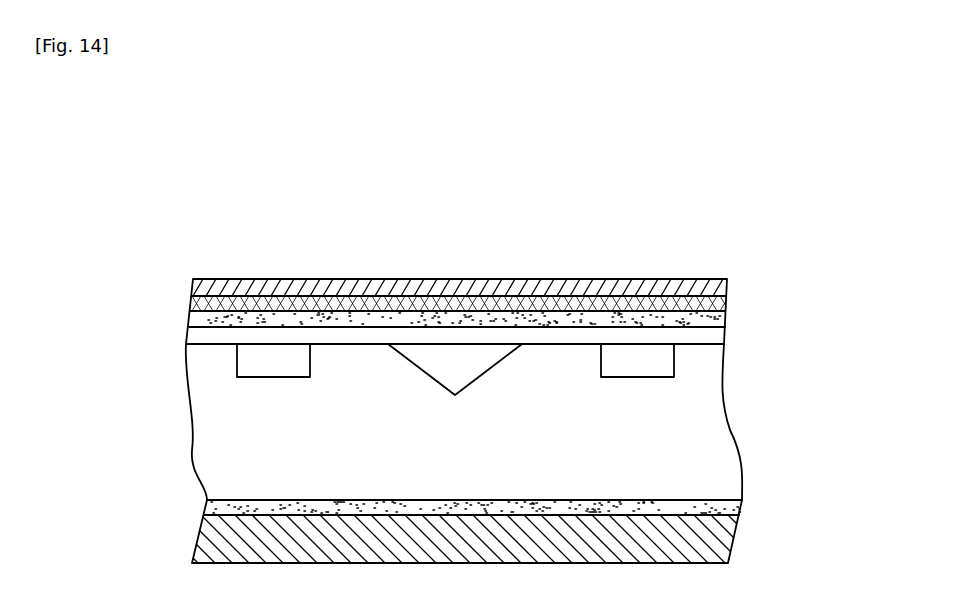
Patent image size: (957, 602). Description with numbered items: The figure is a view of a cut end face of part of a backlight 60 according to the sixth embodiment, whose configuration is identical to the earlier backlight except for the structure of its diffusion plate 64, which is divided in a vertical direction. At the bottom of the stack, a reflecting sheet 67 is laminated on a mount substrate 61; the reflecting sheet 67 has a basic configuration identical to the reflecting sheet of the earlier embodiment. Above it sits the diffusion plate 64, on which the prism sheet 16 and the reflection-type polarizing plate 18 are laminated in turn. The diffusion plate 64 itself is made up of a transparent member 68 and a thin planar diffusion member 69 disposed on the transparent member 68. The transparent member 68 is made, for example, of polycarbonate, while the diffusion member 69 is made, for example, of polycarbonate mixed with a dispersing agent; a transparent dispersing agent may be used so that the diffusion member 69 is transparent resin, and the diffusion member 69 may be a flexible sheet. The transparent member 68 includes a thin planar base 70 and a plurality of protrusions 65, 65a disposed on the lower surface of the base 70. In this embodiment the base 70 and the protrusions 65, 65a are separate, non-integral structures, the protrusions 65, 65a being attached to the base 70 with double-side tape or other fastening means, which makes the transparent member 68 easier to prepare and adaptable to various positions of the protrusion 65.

The backlight 60 is at (723, 199).
The reflection-type polarizing plate 18 is at (729, 285).
The prism sheet 16 is at (727, 305).
The diffusion member 69 is at (722, 320).
The transparent member 68 is at (738, 350).
The diffusion plate 64 is at (823, 327).
The base 70 is at (185, 334).
The protrusion 65 is at (463, 385).
The protrusion 65a is at (275, 368).
The reflecting sheet 67 is at (742, 502).
The mount substrate 61 is at (200, 540).